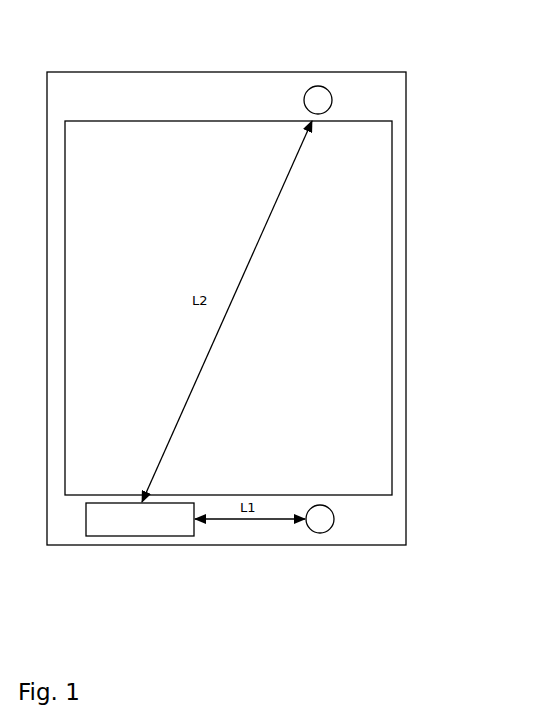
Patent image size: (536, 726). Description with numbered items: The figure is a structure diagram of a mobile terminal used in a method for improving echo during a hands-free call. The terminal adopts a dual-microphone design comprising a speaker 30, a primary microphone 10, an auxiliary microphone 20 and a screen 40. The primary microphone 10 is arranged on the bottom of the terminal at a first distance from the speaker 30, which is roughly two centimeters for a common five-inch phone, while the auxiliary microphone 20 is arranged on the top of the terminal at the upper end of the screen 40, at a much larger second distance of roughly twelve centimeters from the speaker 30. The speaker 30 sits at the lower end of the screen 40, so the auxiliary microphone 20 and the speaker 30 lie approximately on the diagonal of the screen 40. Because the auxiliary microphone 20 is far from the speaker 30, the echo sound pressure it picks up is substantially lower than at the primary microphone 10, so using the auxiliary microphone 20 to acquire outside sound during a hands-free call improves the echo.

The primary microphone 10 is at (327, 531).
The auxiliary microphone 20 is at (326, 89).
The speaker 30 is at (140, 537).
The screen 40 is at (391, 310).